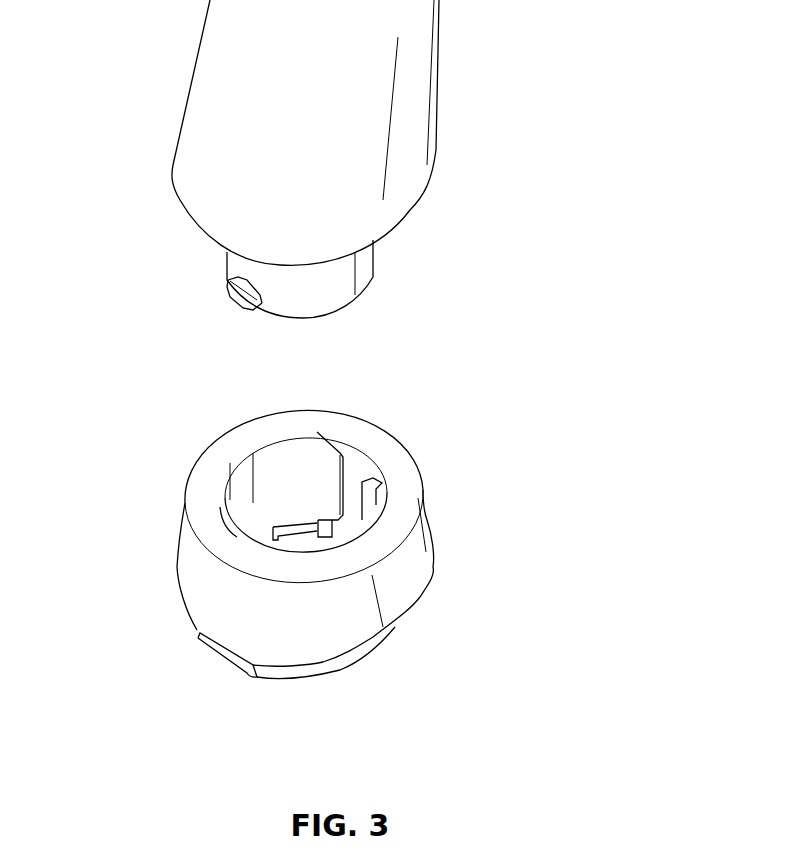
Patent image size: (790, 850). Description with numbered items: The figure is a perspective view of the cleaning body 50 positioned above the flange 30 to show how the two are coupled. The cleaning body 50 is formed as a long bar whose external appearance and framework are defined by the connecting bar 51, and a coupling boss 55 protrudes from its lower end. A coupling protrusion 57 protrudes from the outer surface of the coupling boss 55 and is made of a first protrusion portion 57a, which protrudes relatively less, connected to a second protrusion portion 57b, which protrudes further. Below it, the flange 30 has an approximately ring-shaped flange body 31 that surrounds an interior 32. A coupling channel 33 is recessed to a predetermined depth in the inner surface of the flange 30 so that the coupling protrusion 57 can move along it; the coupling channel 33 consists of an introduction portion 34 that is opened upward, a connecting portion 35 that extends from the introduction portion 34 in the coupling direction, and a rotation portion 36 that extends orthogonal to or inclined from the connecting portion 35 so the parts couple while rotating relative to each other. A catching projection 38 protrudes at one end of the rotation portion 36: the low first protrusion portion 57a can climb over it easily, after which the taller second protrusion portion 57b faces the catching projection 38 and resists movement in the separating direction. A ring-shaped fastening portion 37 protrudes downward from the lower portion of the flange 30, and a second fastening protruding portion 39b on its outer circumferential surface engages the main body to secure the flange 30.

The flange 30 is at (356, 546).
The flange body 31 is at (187, 565).
The interior 32 is at (268, 465).
The coupling channel 33 is at (456, 506).
The introduction portion 34 is at (358, 458).
The connecting portion 35 is at (353, 503).
The rotation portion 36 is at (348, 540).
The fastening portion 37 is at (317, 667).
The catching projection 38 is at (322, 533).
The second fastening protruding portion 39b is at (222, 655).
The cleaning body 50 is at (315, 182).
The connecting bar 51 is at (208, 60).
The coupling boss 55 is at (373, 247).
The coupling protrusion 57 is at (158, 319).
The first protrusion portion 57a is at (240, 312).
The second protrusion portion 57b is at (232, 283).